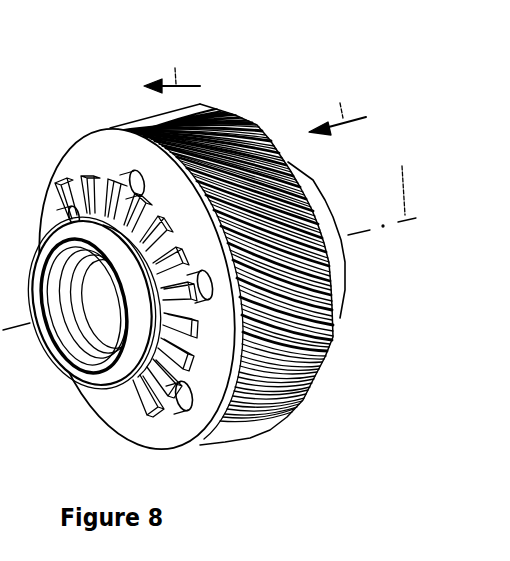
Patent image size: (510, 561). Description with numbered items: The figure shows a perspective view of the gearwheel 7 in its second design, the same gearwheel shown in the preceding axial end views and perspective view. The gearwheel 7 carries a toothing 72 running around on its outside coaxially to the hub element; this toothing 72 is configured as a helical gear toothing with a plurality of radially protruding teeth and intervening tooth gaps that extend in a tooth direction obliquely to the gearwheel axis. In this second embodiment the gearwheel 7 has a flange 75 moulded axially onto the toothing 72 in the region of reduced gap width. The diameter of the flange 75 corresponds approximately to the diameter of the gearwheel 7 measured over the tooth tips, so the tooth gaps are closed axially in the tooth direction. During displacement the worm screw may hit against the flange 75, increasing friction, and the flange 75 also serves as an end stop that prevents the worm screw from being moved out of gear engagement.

The gearwheel 7 is at (209, 241).
The toothing 72 is at (207, 245).
The flange 75 is at (137, 271).